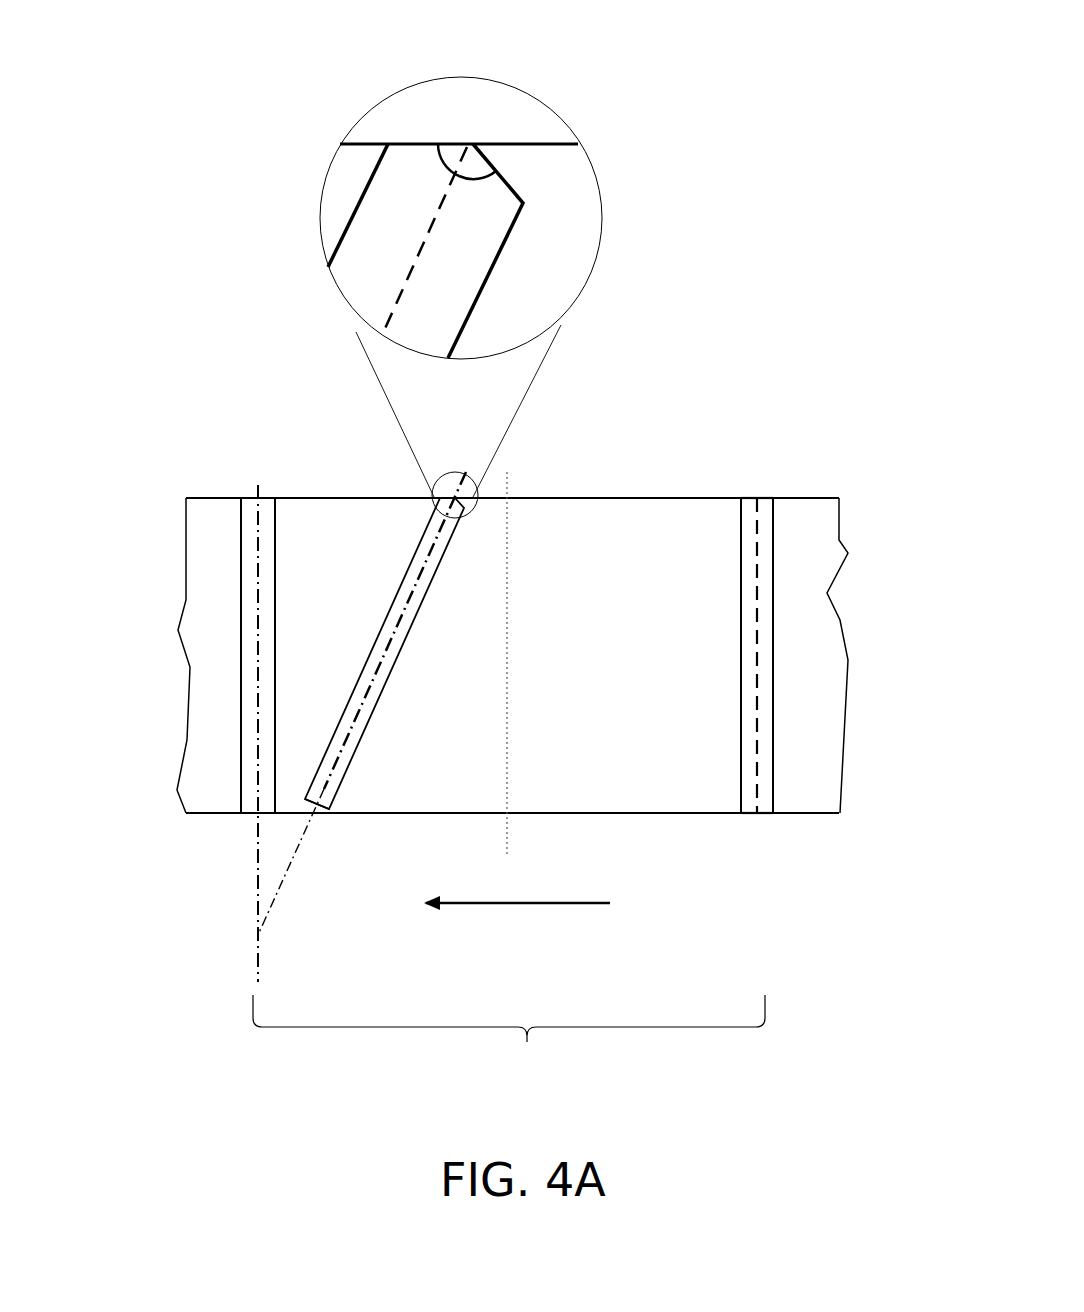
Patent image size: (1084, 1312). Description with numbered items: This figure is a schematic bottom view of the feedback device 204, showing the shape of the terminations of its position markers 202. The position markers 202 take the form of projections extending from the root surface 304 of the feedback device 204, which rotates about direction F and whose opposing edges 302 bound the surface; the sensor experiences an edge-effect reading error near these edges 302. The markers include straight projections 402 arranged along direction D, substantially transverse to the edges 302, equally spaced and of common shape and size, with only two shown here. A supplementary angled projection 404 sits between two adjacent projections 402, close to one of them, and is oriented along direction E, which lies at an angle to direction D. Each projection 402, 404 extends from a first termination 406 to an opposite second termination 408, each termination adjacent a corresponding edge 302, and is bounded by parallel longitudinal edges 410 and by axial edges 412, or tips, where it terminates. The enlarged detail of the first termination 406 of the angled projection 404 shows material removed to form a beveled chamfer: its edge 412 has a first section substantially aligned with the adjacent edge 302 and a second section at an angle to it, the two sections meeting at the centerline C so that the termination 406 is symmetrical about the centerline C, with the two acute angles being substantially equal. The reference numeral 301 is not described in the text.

The position markers 202 is at (509, 1044).
The feedback device 204 is at (158, 628).
The shaft ends 301 is at (216, 484).
The edges 302 is at (658, 498).
The root surface 304 is at (813, 535).
The projections 402 is at (275, 670).
The supplementary projection 404 is at (375, 718).
The first termination 406 is at (462, 513).
The second termination 408 is at (332, 797).
The longitudinal edges 410 is at (357, 193).
The axial edges 412 is at (763, 498).
The centerline C is at (757, 707).
The direction D is at (243, 735).
The direction E is at (362, 703).
The direction F is at (518, 923).